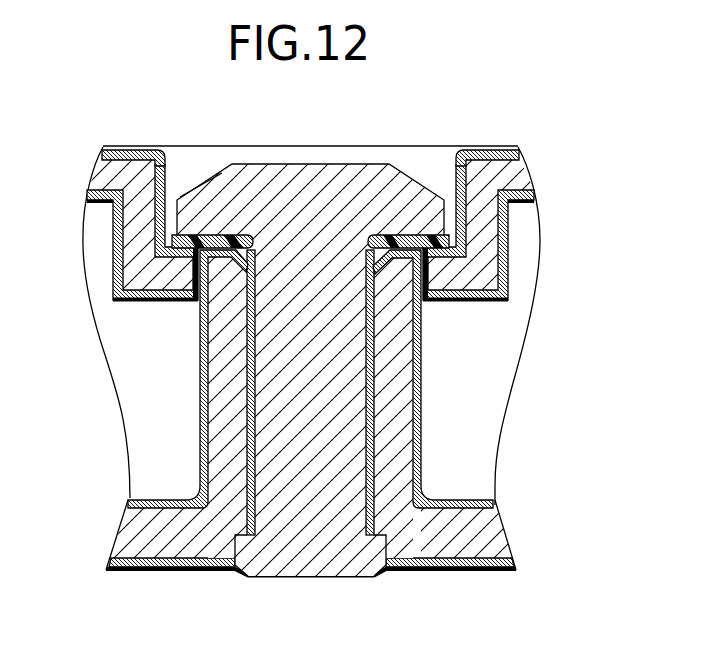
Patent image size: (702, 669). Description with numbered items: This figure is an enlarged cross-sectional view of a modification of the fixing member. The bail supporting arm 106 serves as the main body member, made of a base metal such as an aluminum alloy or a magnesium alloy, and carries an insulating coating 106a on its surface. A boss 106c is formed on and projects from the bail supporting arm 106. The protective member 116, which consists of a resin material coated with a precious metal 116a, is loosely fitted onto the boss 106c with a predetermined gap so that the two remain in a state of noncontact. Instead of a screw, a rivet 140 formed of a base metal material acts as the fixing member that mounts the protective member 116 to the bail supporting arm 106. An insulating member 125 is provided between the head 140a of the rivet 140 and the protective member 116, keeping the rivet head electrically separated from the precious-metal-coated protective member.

The bail supporting arm 106 is at (498, 524).
The insulating coating 106a is at (128, 493).
The boss 106c is at (405, 338).
The protective member 116 is at (502, 248).
The precious metal 116a is at (503, 147).
The insulating member 125 is at (208, 236).
The rivet 140 is at (260, 362).
The head 140a is at (340, 170).